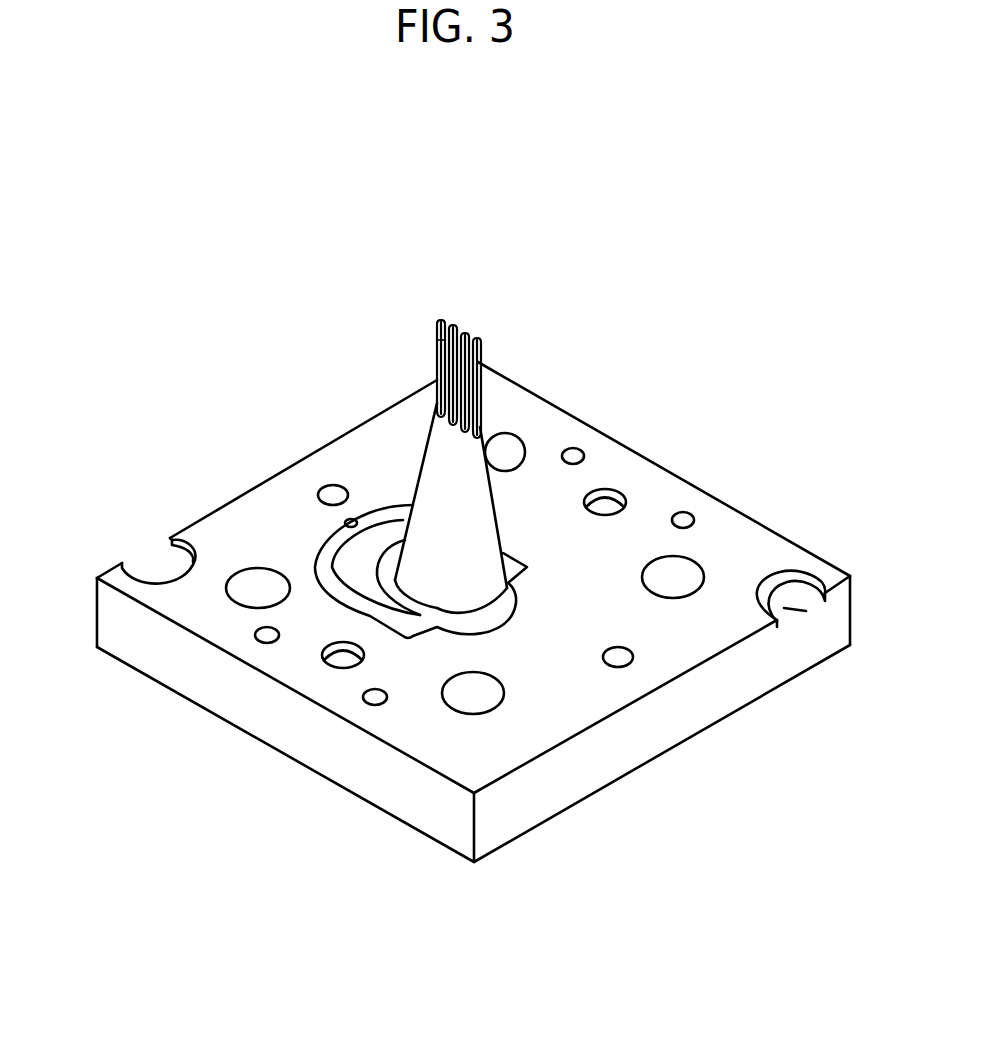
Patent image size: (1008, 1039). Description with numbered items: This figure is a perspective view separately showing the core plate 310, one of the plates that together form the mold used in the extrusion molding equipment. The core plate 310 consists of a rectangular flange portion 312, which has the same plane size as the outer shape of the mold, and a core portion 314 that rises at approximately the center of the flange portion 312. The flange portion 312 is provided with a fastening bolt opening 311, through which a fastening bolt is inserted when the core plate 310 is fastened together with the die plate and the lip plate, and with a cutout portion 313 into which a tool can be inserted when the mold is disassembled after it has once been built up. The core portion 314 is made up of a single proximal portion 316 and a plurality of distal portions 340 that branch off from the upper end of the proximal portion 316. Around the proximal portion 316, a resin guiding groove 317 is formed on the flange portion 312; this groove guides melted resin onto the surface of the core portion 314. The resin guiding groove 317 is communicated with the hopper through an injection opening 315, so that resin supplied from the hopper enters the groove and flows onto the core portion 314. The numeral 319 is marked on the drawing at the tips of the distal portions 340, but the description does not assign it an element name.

The core plate 310 is at (135, 139).
The fastening bolt opening 311 is at (472, 700).
The flange portion 312 is at (730, 508).
The cutout portion 313 is at (783, 607).
The core portion 314 is at (523, 491).
The injection opening 315 is at (333, 525).
The proximal portion 316 is at (435, 460).
The resin guiding groove 317 is at (395, 576).
The probe tip 319 is at (446, 316).
The distal portions 340 is at (437, 340).